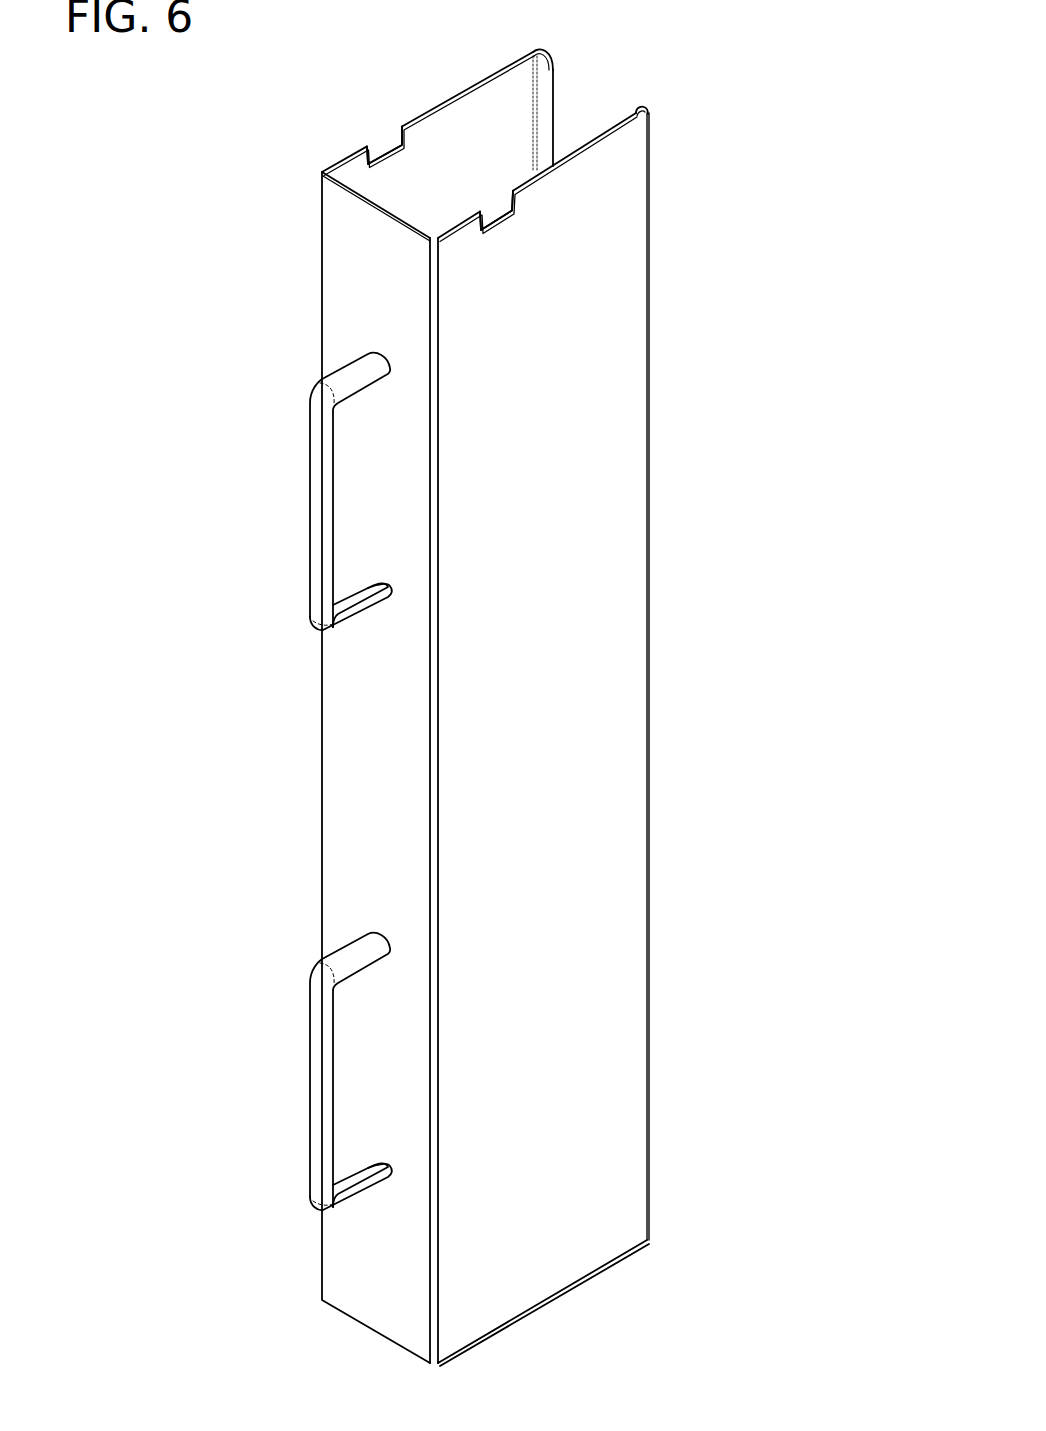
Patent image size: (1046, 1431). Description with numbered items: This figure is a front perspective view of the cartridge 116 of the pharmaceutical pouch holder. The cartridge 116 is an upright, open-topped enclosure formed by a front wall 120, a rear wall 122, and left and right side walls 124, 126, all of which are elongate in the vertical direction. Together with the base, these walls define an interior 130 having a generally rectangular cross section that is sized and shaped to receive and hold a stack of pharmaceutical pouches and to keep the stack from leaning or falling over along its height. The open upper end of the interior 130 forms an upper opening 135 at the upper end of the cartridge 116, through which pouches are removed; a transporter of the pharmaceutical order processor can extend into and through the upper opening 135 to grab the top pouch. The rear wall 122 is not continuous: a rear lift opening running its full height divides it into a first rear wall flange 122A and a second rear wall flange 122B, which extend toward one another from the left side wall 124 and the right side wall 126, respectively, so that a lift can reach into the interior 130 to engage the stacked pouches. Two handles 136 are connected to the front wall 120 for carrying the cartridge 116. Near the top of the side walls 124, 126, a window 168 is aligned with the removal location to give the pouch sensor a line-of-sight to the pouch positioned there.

The cartridge 116 is at (793, 127).
The front wall 120 is at (353, 273).
The rear wall 122 is at (543, 93).
The first rear wall flange 122A is at (545, 72).
The second rear wall flange 122B is at (634, 112).
The left side wall 124 is at (497, 103).
The right side wall 126 is at (607, 502).
The interior 130 is at (468, 155).
The upper opening 135 is at (362, 176).
The handles 136 is at (318, 473).
The window 168 is at (396, 147).